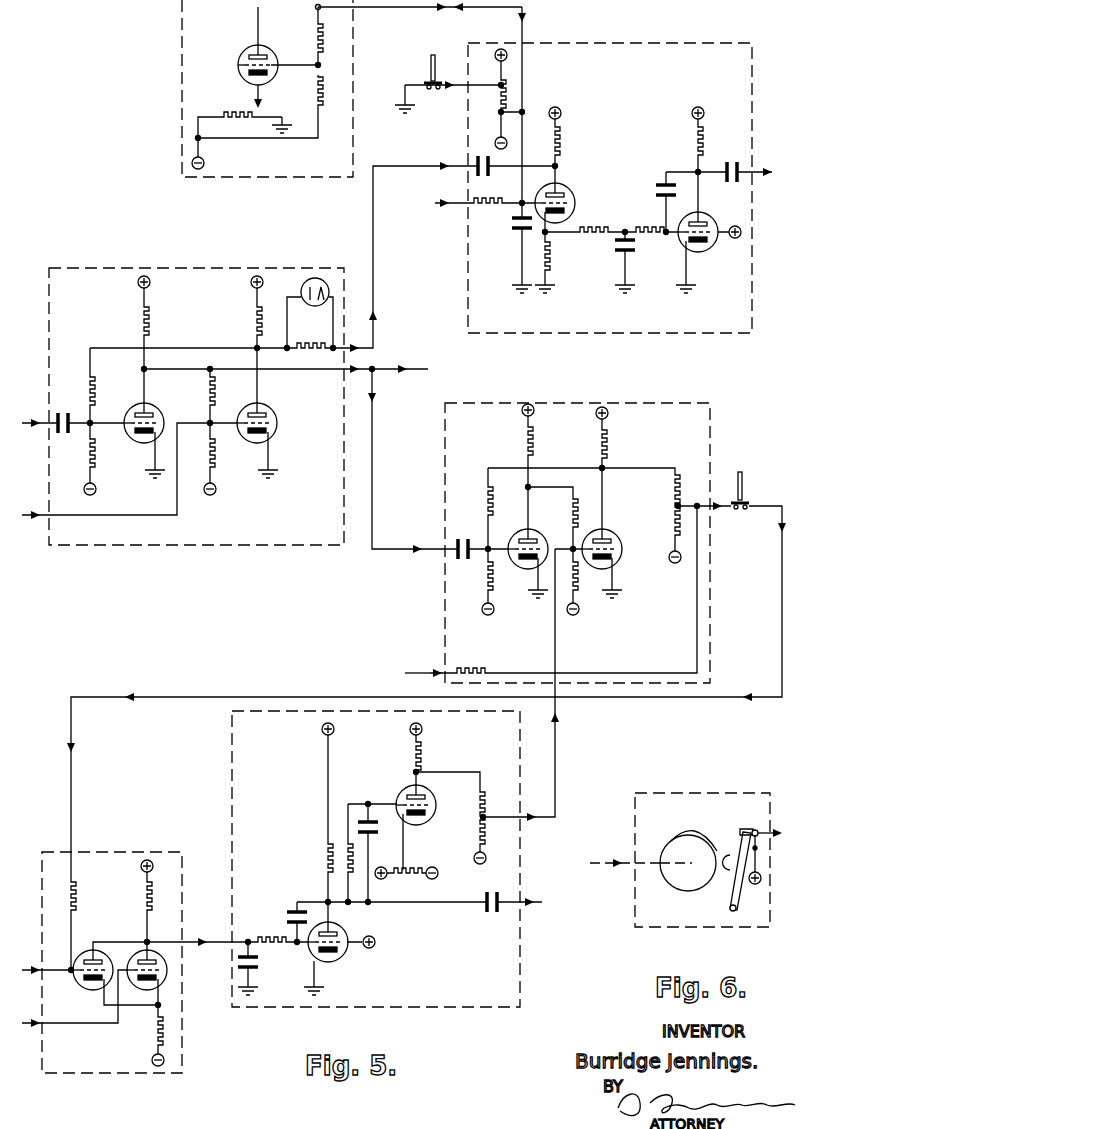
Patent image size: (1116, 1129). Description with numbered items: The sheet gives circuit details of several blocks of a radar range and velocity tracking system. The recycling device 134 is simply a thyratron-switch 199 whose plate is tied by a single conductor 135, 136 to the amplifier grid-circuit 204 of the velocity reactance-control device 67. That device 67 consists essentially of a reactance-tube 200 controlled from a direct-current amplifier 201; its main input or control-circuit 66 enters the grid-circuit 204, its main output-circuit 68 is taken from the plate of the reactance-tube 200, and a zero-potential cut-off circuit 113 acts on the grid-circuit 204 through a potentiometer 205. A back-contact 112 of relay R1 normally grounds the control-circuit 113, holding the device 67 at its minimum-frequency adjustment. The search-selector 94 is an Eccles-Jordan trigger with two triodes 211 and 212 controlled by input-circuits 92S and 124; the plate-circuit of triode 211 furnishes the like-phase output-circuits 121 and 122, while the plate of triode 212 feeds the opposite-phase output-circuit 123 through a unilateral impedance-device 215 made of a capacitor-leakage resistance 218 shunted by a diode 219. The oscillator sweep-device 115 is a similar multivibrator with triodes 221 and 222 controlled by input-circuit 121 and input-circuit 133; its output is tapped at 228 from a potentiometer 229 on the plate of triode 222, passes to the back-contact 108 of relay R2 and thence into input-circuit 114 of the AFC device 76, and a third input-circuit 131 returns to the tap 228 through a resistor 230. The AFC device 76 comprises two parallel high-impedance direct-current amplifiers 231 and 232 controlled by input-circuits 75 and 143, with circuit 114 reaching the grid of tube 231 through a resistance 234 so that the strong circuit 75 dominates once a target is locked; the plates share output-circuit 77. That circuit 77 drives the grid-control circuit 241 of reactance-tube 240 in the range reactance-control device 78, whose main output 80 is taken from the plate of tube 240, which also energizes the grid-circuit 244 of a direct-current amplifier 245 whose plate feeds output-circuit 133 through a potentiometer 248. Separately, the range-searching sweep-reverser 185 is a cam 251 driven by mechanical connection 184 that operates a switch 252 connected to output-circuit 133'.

In FIG. 5, the recycling device 134 is at (182, 28).
In FIG. 5, the thyratron-switch 199 is at (244, 51).
In FIG. 5, the recycling control conductor 135 is at (391, 10).
In FIG. 5, the recycling control conductor 136 is at (523, 20).
In FIG. 5, the relay R1 is at (434, 63).
In FIG. 5, the blocking control-circuit 113 is at (460, 84).
In FIG. 5, the back-contact 112 is at (426, 89).
In FIG. 5, the reactance-control device for velocity 67 is at (644, 46).
In FIG. 5, the potentiometer 205 is at (495, 99).
In FIG. 5, the grid-circuit of direct-current amplifier 204 is at (526, 200).
In FIG. 5, the direct-current amplifier 201 is at (582, 186).
In FIG. 5, the reactance-tube 200 is at (717, 216).
In FIG. 5, the main output-circuit 68 is at (761, 172).
In FIG. 5, the main input or control-circuit 66 is at (475, 203).
In FIG. 5, the output-circuit 123 is at (436, 166).
In FIG. 5, the search-selector 94 is at (112, 268).
In FIG. 5, the diode 219 is at (315, 278).
In FIG. 5, the unilateral impedance-device 215 is at (324, 329).
In FIG. 5, the capacitor-leakage resistance 218 is at (302, 352).
In FIG. 5, the triode 211 is at (153, 413).
In FIG. 5, the triode 212 is at (267, 417).
In FIG. 5, the input-circuit 92S is at (50, 418).
In FIG. 5, the input-circuit 124 is at (42, 514).
In FIG. 5, the output-circuit 122 is at (303, 370).
In FIG. 5, the output-circuit 121 is at (374, 392).
In FIG. 5, the oscillator sweep-device 115 is at (445, 423).
In FIG. 5, the triode 221 is at (531, 528).
In FIG. 5, the triode 222 is at (612, 535).
In FIG. 5, the output-circuit 228 is at (684, 500).
In FIG. 5, the potentiometer 229 is at (675, 498).
In FIG. 5, the relay R2 is at (741, 481).
In FIG. 5, the input-circuit 114 is at (757, 504).
In FIG. 5, the back-contact 108 is at (738, 510).
In FIG. 5, the resistor 230 is at (480, 673).
In FIG. 5, the third input-circuit 131 is at (410, 674).
In FIG. 5, the output-circuit 133 is at (537, 685).
In FIG. 5, the reactance-control device for range 78 is at (364, 711).
In FIG. 5, the grid-circuit 244 is at (387, 803).
In FIG. 5, the potentiometer 248 is at (476, 803).
In FIG. 5, the direct-current amplifier 245 is at (427, 824).
In FIG. 5, the main output 80 is at (529, 902).
In FIG. 5, the grid-control circuit 241 is at (257, 940).
In FIG. 5, the reactance-tube 240 is at (350, 952).
In FIG. 5, the AFC device 76 is at (94, 855).
In FIG. 5, the resistance 234 is at (76, 898).
In FIG. 5, the output-circuit 77 is at (193, 941).
In FIG. 5, the input-circuit 75 is at (38, 970).
In FIG. 5, the direct-current amplifier 231 is at (87, 992).
In FIG. 5, the direct-current amplifier 232 is at (168, 977).
In FIG. 5, the input-circuit 143 is at (40, 1023).
In FIG. 6, the range-searching sweep-reverser 185 is at (666, 793).
In FIG. 6, the cam 251 is at (670, 838).
In FIG. 6, the switch 252 is at (752, 832).
In FIG. 6, the output-circuit 133' is at (787, 825).
In FIG. 6, the mechanical connection 184 is at (620, 860).